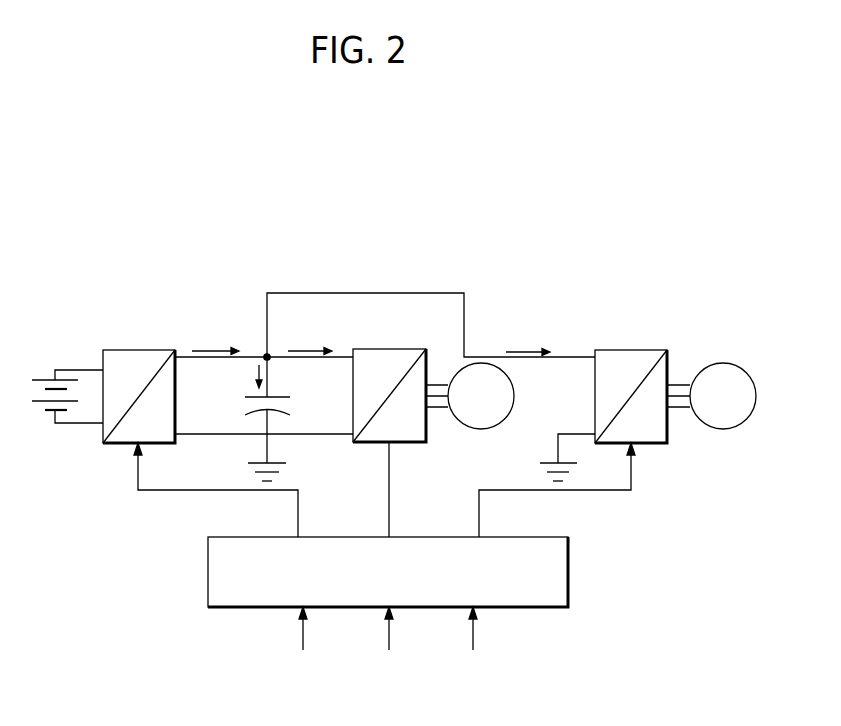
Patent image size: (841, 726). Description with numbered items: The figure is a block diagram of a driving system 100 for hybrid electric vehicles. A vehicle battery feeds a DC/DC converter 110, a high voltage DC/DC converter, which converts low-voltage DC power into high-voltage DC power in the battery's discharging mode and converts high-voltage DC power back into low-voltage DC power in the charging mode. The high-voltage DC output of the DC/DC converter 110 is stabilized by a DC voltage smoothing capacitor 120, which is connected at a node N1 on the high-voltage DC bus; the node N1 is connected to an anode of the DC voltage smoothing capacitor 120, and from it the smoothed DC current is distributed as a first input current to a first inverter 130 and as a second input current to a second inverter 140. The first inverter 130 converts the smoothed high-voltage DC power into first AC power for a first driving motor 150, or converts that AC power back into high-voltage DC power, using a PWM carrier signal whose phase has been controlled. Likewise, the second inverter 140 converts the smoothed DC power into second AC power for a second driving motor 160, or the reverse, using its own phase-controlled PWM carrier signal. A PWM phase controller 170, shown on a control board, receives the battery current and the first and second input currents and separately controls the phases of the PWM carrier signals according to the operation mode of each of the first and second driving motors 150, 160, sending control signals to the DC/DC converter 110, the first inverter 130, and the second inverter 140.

The driving system 100 is at (387, 242).
The DC/DC converter 110 is at (115, 444).
The DC voltage smoothing capacitor 120 is at (245, 397).
The first inverter 130 is at (426, 350).
The second inverter 140 is at (667, 350).
The first driving motor 150 is at (514, 396).
The second driving motor 160 is at (756, 396).
The PWM phase controller 170 is at (568, 571).
The node N1 is at (266, 356).